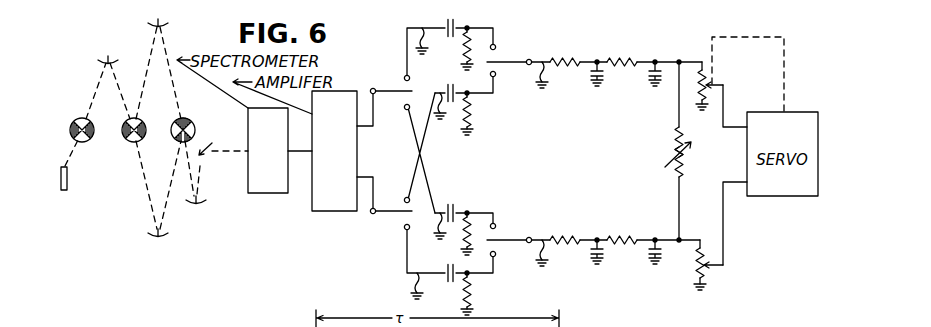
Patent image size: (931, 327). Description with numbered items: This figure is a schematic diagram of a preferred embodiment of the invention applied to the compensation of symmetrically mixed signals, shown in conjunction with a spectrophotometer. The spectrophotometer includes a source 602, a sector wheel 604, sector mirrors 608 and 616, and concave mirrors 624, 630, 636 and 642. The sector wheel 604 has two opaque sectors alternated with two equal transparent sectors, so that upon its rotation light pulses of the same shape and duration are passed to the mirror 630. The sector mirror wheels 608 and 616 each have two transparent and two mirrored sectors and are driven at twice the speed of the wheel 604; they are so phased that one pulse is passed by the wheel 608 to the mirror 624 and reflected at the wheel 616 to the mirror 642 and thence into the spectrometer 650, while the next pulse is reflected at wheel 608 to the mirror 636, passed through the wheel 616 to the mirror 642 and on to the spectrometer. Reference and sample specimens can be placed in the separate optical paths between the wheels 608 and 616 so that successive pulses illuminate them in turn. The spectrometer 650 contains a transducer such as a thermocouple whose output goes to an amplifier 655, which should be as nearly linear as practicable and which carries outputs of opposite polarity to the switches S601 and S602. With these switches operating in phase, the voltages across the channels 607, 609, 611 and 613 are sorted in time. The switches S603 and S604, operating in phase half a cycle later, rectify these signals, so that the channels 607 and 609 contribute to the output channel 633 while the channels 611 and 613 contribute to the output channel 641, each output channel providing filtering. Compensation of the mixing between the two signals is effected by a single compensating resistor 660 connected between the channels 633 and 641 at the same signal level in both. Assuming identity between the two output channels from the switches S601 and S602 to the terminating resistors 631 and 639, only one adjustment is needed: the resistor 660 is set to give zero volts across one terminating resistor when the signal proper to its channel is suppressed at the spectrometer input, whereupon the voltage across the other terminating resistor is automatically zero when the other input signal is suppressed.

The source 602 is at (64, 191).
The sector wheel 604 is at (76, 122).
The sector mirror 608 is at (126, 138).
The sector mirror 616 is at (192, 122).
The concave mirror 630 is at (108, 58).
The concave mirror 636 is at (161, 21).
The concave mirror 624 is at (156, 240).
The concave mirror 642 is at (197, 206).
The spectrometer 650 is at (265, 194).
The amplifier 655 is at (330, 213).
The switch S601 is at (382, 88).
The switch S602 is at (389, 215).
The channel 607 is at (425, 41).
The channel 609 is at (447, 110).
The channel 611 is at (448, 222).
The channel 613 is at (421, 279).
The switch S603 is at (522, 54).
The switch S604 is at (524, 230).
The output channel 633 is at (547, 71).
The output channel 641 is at (547, 249).
The terminating resistor 631 is at (707, 74).
The terminating resistor 639 is at (695, 266).
The compensating resistor 660 is at (669, 153).